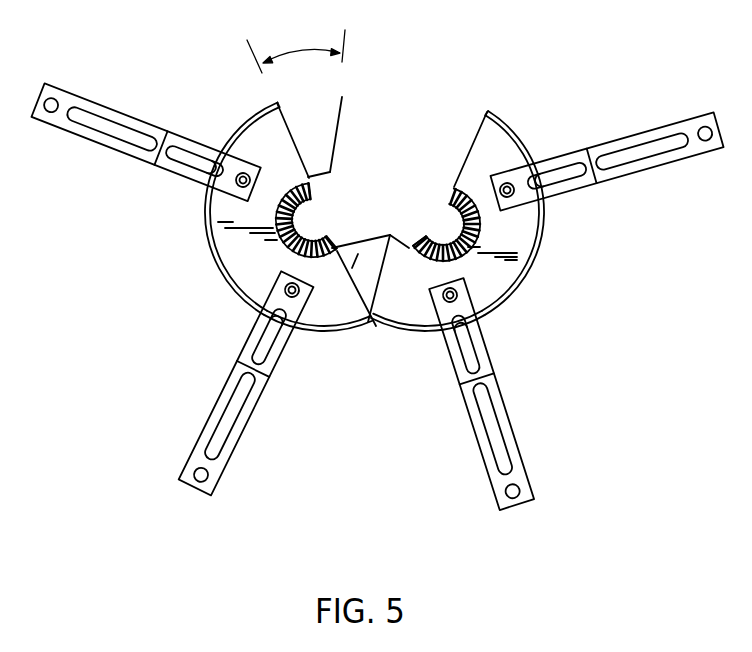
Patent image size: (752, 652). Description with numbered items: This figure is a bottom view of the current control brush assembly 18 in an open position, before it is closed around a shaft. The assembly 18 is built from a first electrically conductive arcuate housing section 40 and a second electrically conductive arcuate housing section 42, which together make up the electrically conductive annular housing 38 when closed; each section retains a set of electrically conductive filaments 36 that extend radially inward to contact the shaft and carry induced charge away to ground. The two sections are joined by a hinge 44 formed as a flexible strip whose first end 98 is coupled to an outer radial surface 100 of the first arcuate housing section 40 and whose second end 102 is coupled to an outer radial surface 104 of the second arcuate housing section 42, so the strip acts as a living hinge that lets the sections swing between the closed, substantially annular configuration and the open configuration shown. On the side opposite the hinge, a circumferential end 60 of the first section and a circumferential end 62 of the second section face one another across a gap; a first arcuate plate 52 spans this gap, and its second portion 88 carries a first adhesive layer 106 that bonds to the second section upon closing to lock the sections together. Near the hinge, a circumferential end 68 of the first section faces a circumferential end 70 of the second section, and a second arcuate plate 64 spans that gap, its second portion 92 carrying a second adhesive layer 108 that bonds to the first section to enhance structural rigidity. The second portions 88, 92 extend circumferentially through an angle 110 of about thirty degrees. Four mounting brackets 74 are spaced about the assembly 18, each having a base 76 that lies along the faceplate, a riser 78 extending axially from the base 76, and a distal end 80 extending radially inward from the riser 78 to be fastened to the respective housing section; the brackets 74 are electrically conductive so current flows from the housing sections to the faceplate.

The current control brush assembly 18 is at (306, 200).
The electrically conductive filaments 36 is at (297, 230).
The electrically conductive annular housing 38 is at (493, 235).
The first electrically conductive arcuate housing section 40 is at (317, 200).
The second electrically conductive arcuate housing section 42 is at (493, 235).
The hinge 44 is at (370, 322).
The first arcuate plate 52 is at (327, 181).
The circumferential end of the first arcuate housing section 60 is at (293, 107).
The circumferential end of the second arcuate housing section 62 is at (478, 121).
The second arcuate plate 64 is at (379, 232).
The circumferential end of the first arcuate housing section 68 is at (357, 256).
The circumferential end of the second arcuate housing section 70 is at (409, 244).
The mounting brackets 74 is at (109, 91).
The base 76 is at (62, 122).
The riser 78 is at (170, 138).
The distal end 80 is at (202, 147).
The second portion of the first arcuate plate 88 is at (322, 138).
The second portion of the second arcuate plate 92 is at (400, 233).
The first end of the flexible strip 98 is at (330, 336).
The outer radial surface of the first arcuate housing section 100 is at (228, 287).
The second end of the flexible strip 102 is at (427, 337).
The outer radial surface of the second arcuate housing section 104 is at (548, 244).
The first adhesive layer 106 is at (323, 116).
The second adhesive layer 108 is at (388, 300).
The angle 110 is at (303, 52).